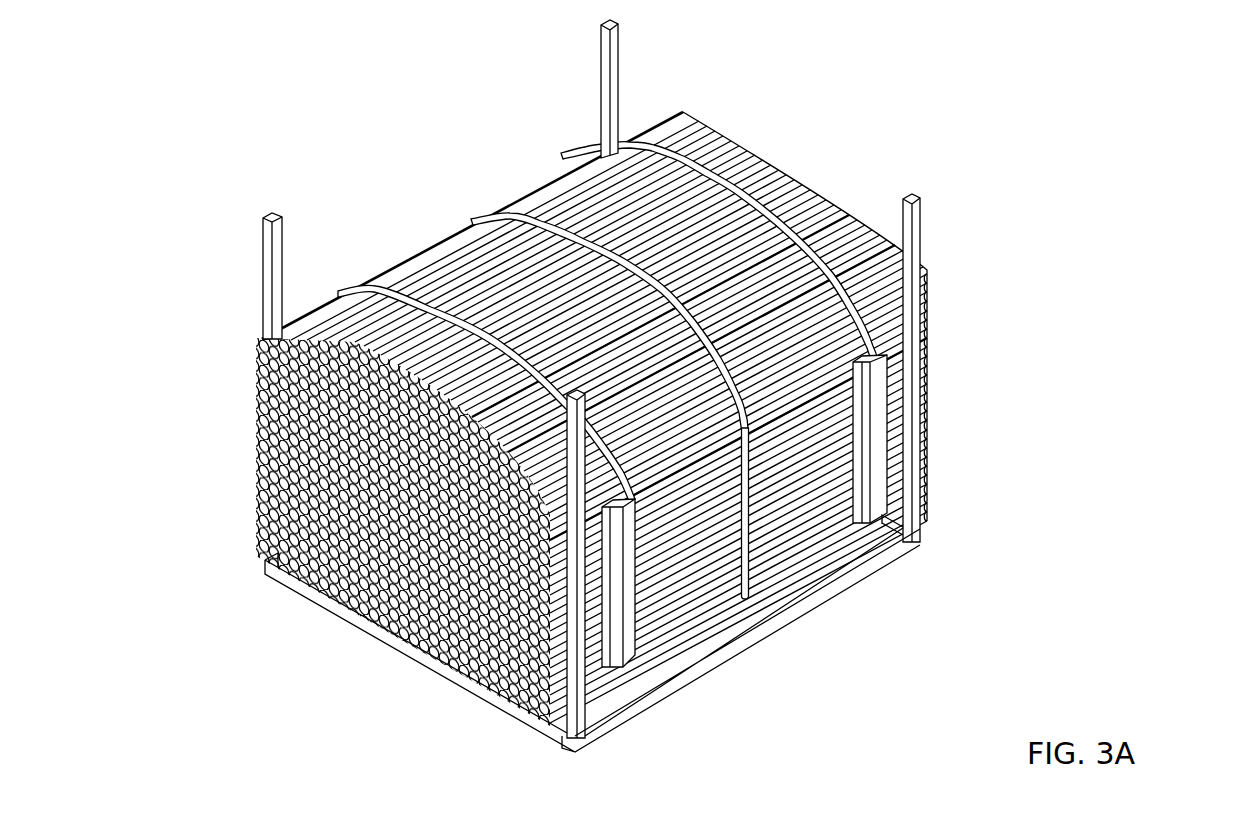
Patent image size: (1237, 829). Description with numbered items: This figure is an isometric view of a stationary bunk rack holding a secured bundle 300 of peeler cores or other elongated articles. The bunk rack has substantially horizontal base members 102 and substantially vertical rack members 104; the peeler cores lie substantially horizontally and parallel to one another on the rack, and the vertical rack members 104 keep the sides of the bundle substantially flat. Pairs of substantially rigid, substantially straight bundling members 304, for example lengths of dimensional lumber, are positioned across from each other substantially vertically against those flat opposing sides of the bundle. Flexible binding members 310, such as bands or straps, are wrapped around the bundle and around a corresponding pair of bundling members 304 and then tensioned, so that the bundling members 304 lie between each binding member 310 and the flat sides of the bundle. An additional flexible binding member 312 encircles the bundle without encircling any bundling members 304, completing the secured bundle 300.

The secured bundle 300 is at (345, 112).
The base members 102 is at (563, 745).
The vertical rack members 104 is at (268, 250).
The bundling members 304 is at (603, 662).
The flexible binding members 310 is at (399, 297).
The additional flexible binding members 312 is at (540, 223).